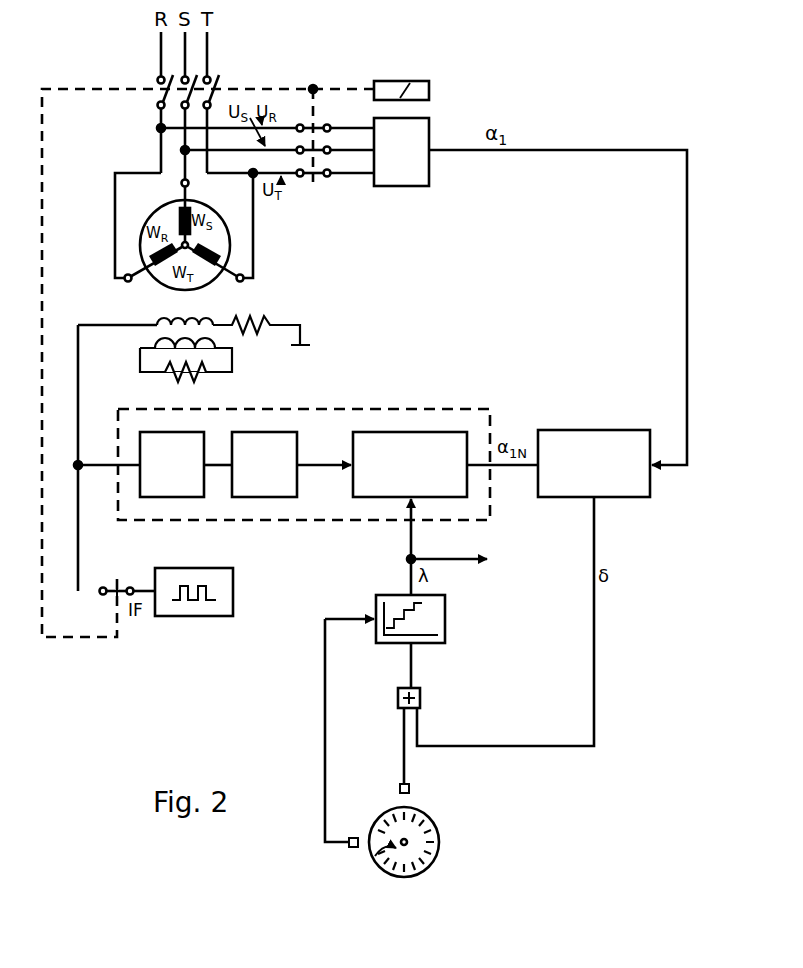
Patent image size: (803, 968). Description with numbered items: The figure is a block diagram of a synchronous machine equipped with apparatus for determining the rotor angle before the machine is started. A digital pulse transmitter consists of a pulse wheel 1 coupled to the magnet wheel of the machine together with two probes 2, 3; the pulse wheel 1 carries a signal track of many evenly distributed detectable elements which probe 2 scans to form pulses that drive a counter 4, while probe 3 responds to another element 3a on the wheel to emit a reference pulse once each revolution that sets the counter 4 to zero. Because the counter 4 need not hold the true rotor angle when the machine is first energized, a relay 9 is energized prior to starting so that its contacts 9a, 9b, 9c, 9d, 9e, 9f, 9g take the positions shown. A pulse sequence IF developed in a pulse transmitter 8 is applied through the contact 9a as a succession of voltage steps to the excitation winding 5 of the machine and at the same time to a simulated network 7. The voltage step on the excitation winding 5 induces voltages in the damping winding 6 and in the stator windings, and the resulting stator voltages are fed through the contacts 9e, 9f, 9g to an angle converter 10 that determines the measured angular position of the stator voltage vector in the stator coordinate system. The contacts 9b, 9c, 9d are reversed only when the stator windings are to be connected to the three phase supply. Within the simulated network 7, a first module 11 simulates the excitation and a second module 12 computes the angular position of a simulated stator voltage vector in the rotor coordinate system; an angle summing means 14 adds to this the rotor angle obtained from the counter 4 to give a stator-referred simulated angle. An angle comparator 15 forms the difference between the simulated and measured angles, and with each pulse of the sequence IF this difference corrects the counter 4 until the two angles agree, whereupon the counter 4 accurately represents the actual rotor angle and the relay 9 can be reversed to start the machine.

The pulse wheel 1 is at (441, 828).
The probe 2 is at (409, 789).
The probe 3 is at (353, 836).
The element 3a is at (375, 856).
The counter 4 is at (445, 619).
The excitation winding 5 is at (155, 322).
The damping winding 6 is at (150, 360).
The simulated network 7 is at (116, 436).
The pulse transmitter 8 is at (233, 591).
The relay 9 is at (395, 58).
The relay contact 9a is at (117, 578).
The relay contact 9b is at (158, 80).
The relay contact 9c is at (191, 82).
The relay contact 9d is at (222, 82).
The relay contact 9e is at (325, 125).
The relay contact 9f is at (325, 148).
The relay contact 9g is at (325, 171).
The angle converter 10 is at (402, 160).
The first module 11 is at (180, 470).
The second module 12 is at (278, 470).
The angle summing means 14 is at (352, 485).
The angle comparator 15 is at (550, 498).